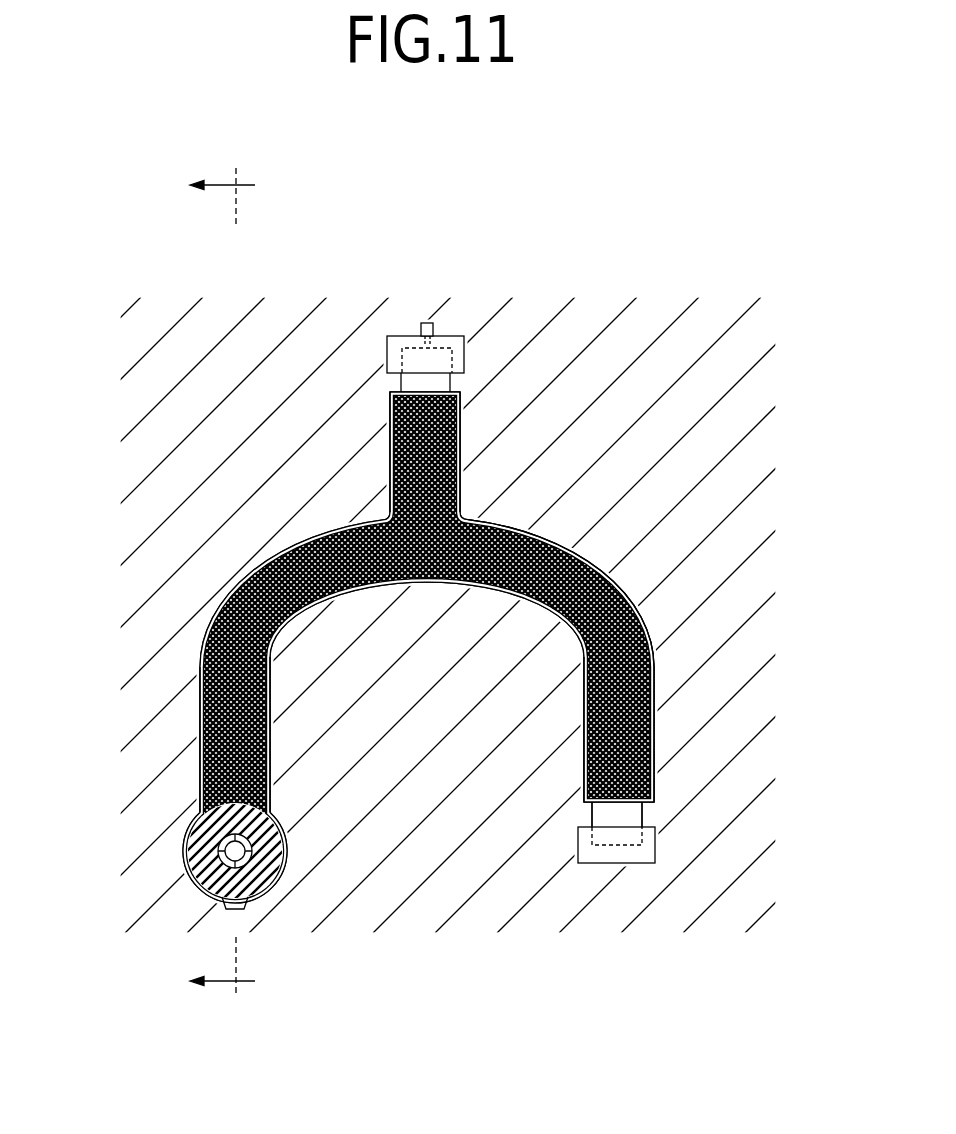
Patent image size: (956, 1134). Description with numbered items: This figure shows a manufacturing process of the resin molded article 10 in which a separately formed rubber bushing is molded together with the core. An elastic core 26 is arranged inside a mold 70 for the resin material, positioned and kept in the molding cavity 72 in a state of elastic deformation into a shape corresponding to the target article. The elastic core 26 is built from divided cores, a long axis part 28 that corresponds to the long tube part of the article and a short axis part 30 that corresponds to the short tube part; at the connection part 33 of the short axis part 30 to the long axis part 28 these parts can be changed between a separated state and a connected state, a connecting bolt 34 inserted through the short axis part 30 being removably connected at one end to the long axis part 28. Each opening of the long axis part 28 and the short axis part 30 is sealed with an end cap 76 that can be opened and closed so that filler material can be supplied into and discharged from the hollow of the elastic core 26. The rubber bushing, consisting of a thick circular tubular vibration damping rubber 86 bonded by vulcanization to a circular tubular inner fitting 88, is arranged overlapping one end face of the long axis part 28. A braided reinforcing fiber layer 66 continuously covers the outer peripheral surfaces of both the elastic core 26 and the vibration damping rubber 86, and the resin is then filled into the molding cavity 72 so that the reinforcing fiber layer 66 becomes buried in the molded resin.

The resin molded article 10 is at (229, 583).
The elastic core 26 is at (485, 357).
The long axis part 28 is at (628, 818).
The short axis part 30 is at (410, 382).
The connection part 33 is at (478, 494).
The connecting bolt 34 is at (426, 323).
The reinforcing fiber layer 66 is at (227, 718).
The mold 70 is at (205, 515).
The molding cavity 72 is at (641, 665).
The end cap 76 is at (397, 343).
The vibration damping rubber 86 is at (197, 832).
The inner fitting 88 is at (220, 855).